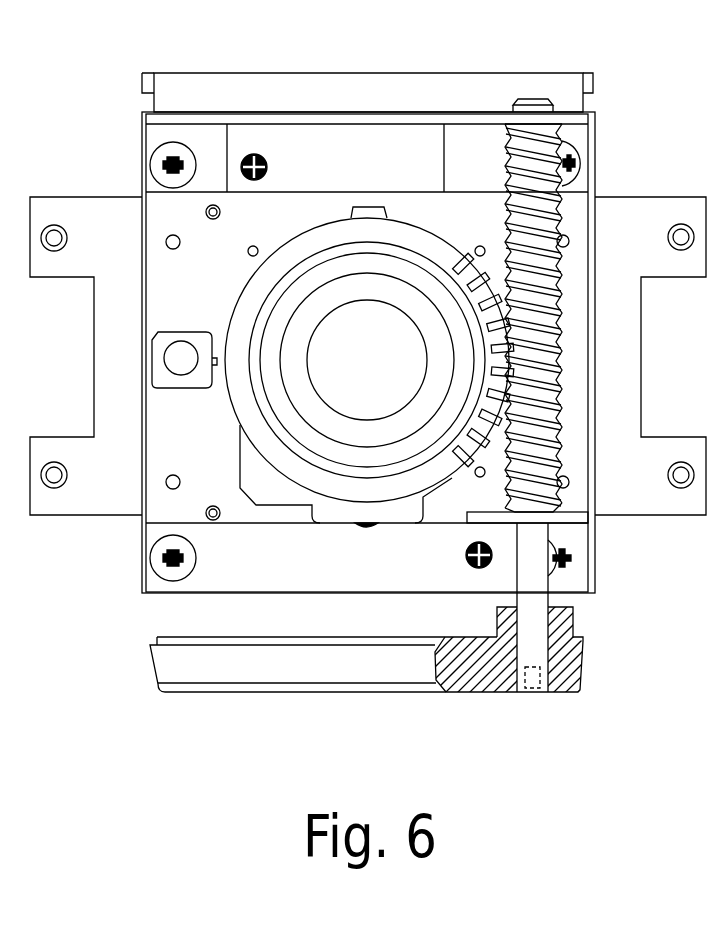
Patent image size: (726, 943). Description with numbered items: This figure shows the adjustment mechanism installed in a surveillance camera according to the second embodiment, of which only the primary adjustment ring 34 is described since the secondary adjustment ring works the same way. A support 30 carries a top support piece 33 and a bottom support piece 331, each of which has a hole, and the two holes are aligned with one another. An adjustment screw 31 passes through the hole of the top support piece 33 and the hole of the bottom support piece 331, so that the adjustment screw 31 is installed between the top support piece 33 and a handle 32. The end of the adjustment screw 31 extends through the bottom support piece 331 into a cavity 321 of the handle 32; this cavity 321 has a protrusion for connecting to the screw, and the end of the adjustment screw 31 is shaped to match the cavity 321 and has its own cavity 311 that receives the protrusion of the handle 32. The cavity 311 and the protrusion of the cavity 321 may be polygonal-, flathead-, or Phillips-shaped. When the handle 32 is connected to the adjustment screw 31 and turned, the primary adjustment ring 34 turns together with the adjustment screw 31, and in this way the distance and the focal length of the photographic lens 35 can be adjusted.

The support 30 is at (436, 85).
The top support piece 33 is at (575, 117).
The adjustment screw 31 is at (569, 240).
The primary adjustment ring 34 is at (261, 285).
The photographic lens 35 is at (302, 430).
The bottom support piece 331 is at (577, 517).
The cavity of the handle 321 is at (523, 620).
The handle 32 is at (367, 672).
The cavity of the adjustment screw end 311 is at (541, 680).